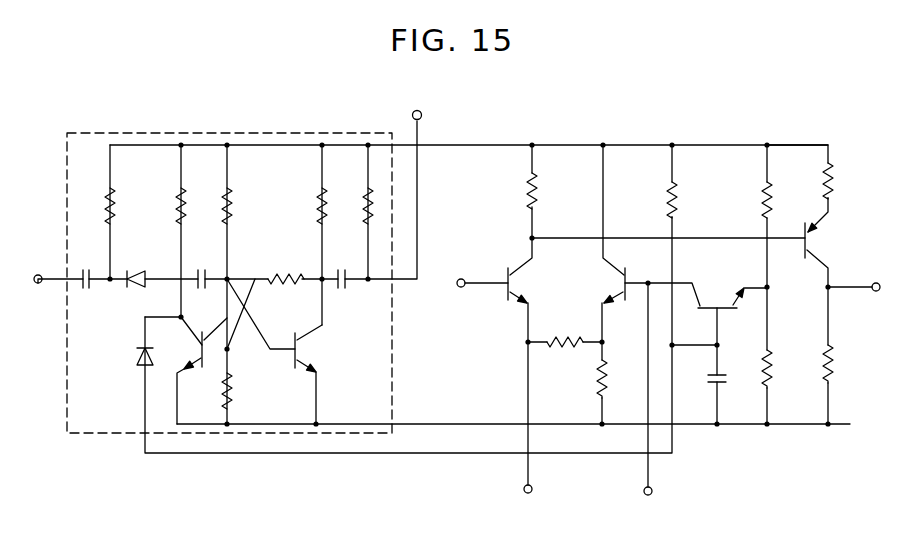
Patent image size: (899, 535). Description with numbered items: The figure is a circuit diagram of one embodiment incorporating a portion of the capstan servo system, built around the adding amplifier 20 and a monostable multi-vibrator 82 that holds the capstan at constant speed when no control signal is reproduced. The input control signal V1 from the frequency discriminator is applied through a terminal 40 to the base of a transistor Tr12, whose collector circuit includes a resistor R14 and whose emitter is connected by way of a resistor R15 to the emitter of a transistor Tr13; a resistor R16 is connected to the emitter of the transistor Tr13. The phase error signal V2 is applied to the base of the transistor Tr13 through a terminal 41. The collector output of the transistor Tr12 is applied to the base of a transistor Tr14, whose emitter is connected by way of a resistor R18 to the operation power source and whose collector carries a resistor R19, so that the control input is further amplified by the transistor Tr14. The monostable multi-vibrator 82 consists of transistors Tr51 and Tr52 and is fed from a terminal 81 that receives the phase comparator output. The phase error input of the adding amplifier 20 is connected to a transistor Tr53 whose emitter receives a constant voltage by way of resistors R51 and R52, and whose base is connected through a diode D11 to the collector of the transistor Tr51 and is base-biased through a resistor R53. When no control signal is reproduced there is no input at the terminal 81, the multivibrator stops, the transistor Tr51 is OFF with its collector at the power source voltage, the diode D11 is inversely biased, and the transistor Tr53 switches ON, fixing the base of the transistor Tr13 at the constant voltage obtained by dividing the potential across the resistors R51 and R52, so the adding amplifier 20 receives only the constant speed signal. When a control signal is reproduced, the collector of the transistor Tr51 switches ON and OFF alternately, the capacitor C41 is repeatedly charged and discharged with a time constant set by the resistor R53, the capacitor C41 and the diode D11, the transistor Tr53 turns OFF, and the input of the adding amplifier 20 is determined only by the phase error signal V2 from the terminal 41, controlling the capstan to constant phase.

The adding amplifier 20 is at (802, 136).
The terminal 81 is at (422, 115).
The monostable multi-vibrator 82 is at (283, 193).
The terminal 40 is at (461, 279).
The terminal 41 is at (653, 490).
The diode D11 is at (128, 368).
The transistor Tr51 is at (198, 365).
The transistor Tr52 is at (319, 374).
The transistor Tr12 is at (504, 299).
The transistor Tr13 is at (597, 285).
The transistor Tr53 is at (720, 287).
The transistor Tr14 is at (830, 241).
The resistor R14 is at (548, 191).
The resistor R15 is at (565, 332).
The resistor R16 is at (617, 381).
The resistor R53 is at (688, 201).
The resistor R51 is at (749, 208).
The resistor R18 is at (808, 181).
The resistor R52 is at (781, 372).
The resistor R19 is at (842, 364).
The capacitor C41 is at (728, 395).
The input control signal V1 is at (444, 289).
The phase error signal V2 is at (625, 496).